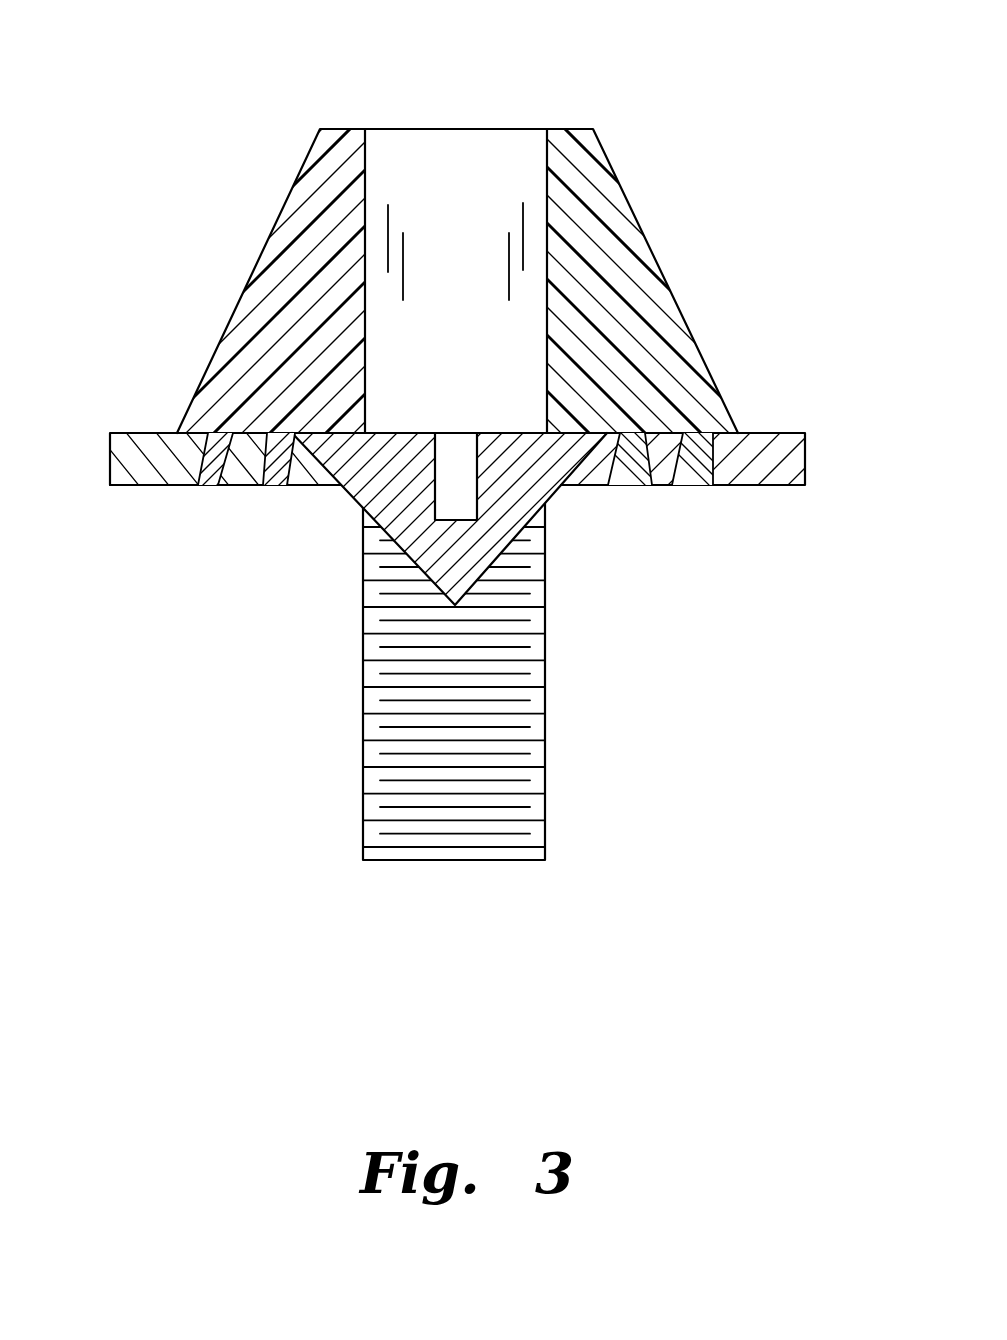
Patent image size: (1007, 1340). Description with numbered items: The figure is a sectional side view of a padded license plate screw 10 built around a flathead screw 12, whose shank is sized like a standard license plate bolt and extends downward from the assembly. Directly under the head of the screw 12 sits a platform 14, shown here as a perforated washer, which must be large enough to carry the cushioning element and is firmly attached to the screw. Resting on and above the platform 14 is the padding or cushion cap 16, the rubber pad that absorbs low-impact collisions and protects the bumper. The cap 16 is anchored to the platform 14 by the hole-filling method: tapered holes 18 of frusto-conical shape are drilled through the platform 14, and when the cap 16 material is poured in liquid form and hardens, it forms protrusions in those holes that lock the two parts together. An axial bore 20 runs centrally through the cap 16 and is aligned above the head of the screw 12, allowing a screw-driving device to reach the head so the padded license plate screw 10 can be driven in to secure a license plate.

The padded license plate screw 10 is at (483, 435).
The screw 12 is at (548, 693).
The platform 14 is at (807, 457).
The cap 16 is at (625, 228).
The tapered holes 18 is at (282, 482).
The axial bore 20 is at (441, 153).